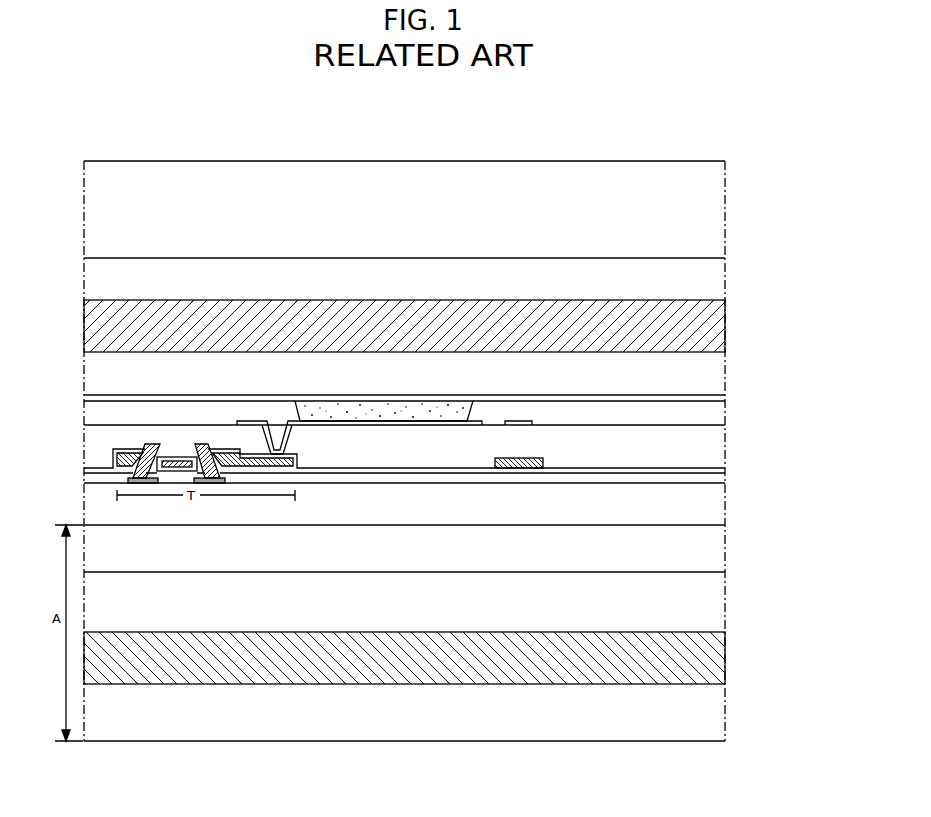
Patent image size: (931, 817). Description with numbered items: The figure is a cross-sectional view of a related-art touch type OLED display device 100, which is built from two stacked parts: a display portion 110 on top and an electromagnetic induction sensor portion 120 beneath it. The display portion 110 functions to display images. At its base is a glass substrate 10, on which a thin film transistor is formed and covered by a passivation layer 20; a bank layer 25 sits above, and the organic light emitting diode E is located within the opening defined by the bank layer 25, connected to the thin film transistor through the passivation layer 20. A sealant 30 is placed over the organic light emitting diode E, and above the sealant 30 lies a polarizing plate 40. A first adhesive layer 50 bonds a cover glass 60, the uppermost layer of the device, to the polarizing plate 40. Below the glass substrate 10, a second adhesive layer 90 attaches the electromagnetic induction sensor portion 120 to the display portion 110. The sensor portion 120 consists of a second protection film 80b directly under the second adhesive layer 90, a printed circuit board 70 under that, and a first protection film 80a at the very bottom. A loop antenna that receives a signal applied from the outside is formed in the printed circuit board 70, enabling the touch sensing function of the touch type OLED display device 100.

The touch type OLED display device 100 is at (414, 123).
The display portion 110 is at (84, 161).
The electromagnetic induction sensor portion 120 is at (780, 557).
The glass substrate 10 is at (712, 512).
The passivation layer 20 is at (712, 448).
The bank layer 25 is at (712, 414).
The sealant 30 is at (712, 370).
The polarizing plate 40 is at (712, 330).
The first adhesive layer 50 is at (712, 277).
The cover glass 60 is at (712, 210).
The printed circuit board 70 is at (712, 646).
The first protection film 80a is at (712, 723).
The second protection film 80b is at (712, 608).
The second adhesive layer 90 is at (712, 553).
The organic light emitting diode E is at (366, 425).